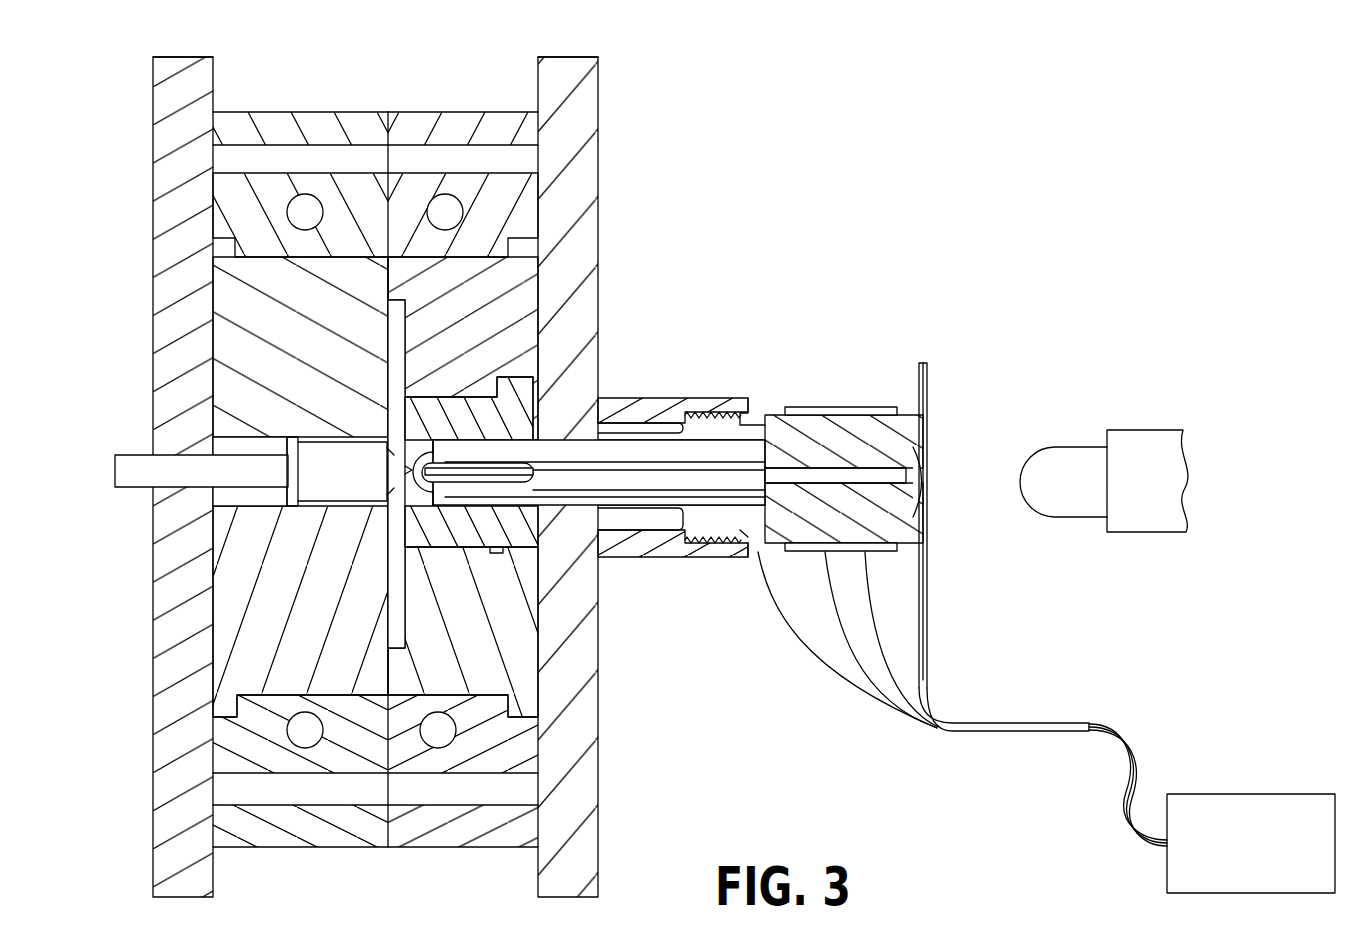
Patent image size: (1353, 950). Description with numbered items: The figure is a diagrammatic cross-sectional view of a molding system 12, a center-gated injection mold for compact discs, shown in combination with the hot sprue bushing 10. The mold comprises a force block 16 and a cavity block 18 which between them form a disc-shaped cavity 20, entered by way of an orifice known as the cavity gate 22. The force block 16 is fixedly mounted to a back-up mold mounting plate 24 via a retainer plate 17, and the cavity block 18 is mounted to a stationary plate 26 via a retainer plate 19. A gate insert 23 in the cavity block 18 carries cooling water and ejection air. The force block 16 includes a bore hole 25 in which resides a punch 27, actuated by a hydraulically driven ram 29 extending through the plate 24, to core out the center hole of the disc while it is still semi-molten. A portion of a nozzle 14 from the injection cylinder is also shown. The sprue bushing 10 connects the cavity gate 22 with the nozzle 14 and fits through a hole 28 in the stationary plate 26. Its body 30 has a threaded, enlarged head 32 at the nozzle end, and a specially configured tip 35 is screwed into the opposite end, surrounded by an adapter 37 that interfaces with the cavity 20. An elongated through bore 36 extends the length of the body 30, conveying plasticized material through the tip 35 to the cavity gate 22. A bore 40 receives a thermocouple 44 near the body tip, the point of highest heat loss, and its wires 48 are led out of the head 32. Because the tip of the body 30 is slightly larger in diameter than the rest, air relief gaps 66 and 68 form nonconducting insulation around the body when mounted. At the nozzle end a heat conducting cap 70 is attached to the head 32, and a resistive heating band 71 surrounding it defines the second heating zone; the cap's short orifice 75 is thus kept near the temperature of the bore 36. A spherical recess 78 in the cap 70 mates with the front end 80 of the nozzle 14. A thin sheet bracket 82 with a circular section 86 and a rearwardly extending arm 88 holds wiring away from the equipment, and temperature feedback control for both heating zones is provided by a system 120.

The hot sprue bushing 10 is at (660, 381).
The molding system 12 is at (727, 60).
The nozzle 14 is at (1157, 424).
The force block 16 is at (228, 292).
The retainer plate 17 is at (300, 118).
The cavity block 18 is at (528, 270).
The retainer plate 19 is at (452, 120).
The cavity 20 is at (400, 332).
The cavity gate 22 is at (405, 471).
The gate insert 23 is at (512, 553).
The back-up mold mounting plate 24 is at (152, 640).
The bore hole 25 is at (250, 500).
The stationary plate 26 is at (598, 160).
The punch 27 is at (332, 458).
The hole 28 is at (572, 503).
The hydraulically driven ram 29 is at (121, 473).
The body 30 is at (617, 415).
The threaded enlarged head 32 is at (722, 412).
The tip 35 is at (414, 454).
The through bore 36 is at (694, 473).
The adapter 37 is at (413, 505).
The bore 40 is at (628, 542).
The thermocouple 44 is at (650, 498).
The thermocouple wires 48 is at (828, 682).
The air relief gap 66 is at (497, 553).
The air relief gap 68 is at (660, 430).
The heat conducting cap 70 is at (877, 442).
The resistive heating band 71 is at (828, 408).
The orifice 75 is at (907, 477).
The spherical recess 78 is at (922, 490).
The nozzle front end 80 is at (1033, 447).
The bracket 82 is at (938, 672).
The circular section 86 is at (928, 618).
The arm 88 is at (1022, 723).
The temperature feedback control system 120 is at (1248, 786).